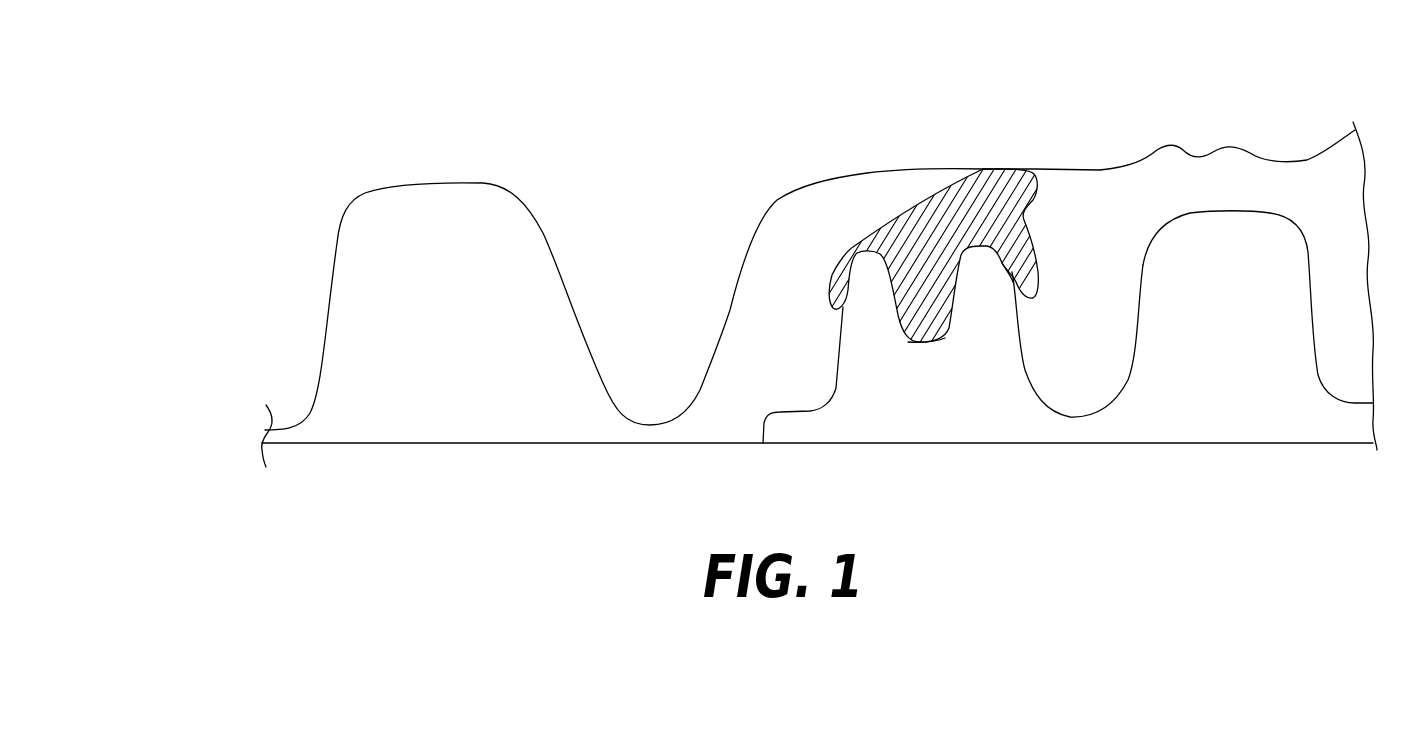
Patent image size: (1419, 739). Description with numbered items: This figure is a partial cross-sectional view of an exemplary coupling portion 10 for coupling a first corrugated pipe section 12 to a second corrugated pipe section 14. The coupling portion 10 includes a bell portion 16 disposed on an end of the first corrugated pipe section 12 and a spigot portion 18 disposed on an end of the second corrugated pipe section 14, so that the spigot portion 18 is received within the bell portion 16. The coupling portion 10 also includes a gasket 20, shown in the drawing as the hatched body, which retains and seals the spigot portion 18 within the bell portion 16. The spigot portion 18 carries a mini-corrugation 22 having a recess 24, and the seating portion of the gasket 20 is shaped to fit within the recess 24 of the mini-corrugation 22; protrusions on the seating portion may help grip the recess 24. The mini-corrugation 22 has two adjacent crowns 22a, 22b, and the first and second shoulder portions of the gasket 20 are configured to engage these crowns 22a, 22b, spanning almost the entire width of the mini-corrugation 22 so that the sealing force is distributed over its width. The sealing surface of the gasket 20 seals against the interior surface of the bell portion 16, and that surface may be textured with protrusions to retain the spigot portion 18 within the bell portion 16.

The coupling portion 10 is at (232, 138).
The first corrugated pipe section 12 is at (355, 337).
The second corrugated pipe section 14 is at (1214, 423).
The bell portion 16 is at (942, 172).
The spigot portion 18 is at (950, 440).
The gasket 20 is at (1012, 190).
The mini-corrugation 22 is at (1002, 350).
The crown 22a is at (1013, 262).
The crown 22b is at (853, 253).
The recess 24 is at (923, 343).